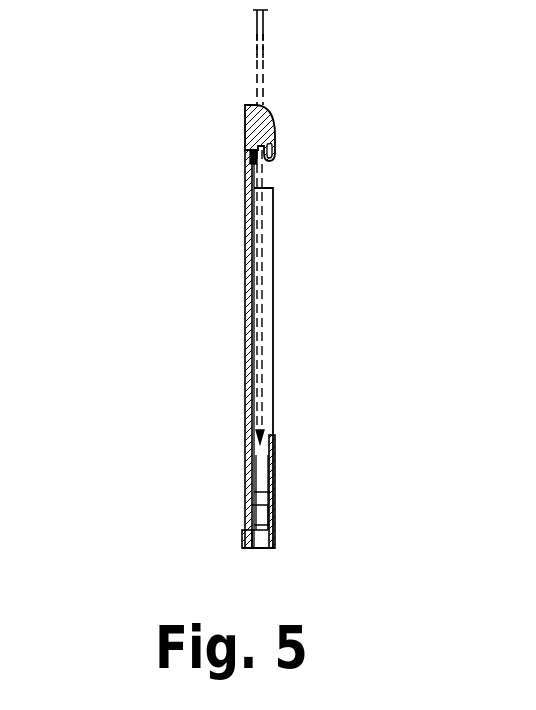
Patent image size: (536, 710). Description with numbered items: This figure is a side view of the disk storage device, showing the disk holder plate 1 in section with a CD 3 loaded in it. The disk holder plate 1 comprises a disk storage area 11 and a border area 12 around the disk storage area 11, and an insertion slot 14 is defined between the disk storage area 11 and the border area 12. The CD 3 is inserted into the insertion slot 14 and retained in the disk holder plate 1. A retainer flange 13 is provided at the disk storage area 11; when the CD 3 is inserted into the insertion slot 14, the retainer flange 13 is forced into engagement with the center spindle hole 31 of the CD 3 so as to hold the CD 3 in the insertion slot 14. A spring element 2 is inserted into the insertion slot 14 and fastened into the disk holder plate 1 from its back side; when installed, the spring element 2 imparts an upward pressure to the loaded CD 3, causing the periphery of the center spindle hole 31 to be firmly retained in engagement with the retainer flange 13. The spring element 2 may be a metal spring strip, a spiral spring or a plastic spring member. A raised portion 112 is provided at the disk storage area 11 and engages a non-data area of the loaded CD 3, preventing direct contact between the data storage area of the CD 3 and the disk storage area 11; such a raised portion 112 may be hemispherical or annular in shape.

The disk holder plate 1 is at (231, 96).
The spring element 2 is at (256, 510).
The CD 3 is at (266, 24).
The disk storage area 11 is at (245, 197).
The border area 12 is at (268, 258).
The retainer flange 13 is at (272, 124).
The insertion slot 14 is at (270, 420).
The center spindle hole 31 is at (262, 56).
The raised portion 112 is at (248, 150).